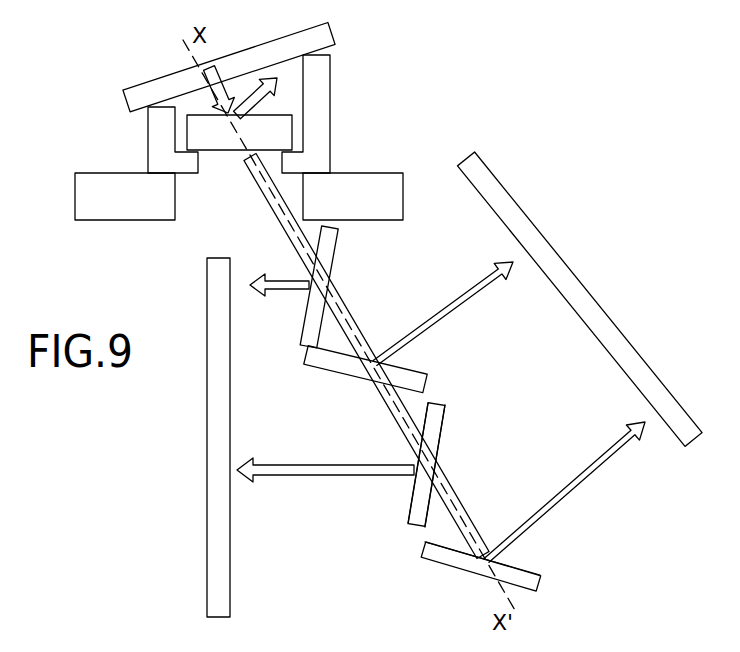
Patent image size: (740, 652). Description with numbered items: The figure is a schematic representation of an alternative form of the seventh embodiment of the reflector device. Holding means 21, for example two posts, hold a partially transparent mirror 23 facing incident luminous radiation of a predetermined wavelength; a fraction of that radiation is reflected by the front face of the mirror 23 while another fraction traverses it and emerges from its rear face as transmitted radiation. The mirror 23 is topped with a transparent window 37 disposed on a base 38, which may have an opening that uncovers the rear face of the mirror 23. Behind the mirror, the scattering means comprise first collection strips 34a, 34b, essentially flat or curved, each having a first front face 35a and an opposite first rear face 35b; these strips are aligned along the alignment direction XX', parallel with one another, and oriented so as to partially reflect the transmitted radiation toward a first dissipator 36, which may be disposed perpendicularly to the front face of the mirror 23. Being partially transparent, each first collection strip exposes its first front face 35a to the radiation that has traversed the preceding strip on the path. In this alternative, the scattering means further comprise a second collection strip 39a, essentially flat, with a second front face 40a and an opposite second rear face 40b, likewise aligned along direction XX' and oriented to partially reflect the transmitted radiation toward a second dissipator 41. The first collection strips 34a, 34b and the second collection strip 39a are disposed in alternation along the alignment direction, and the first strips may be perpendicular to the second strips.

The holding means 21 is at (88, 190).
The partially transparent mirror 23 is at (280, 137).
The transparent window 37 is at (133, 99).
The base 38 is at (323, 70).
The first collection strip 34a is at (327, 254).
The first collection strip 34b is at (420, 503).
The first front face 35a is at (415, 487).
The first rear face 35b is at (447, 440).
The first dissipator 36 is at (208, 507).
The second collection strip 39a is at (425, 380).
The second front face 40a is at (522, 565).
The second rear face 40b is at (440, 562).
The second dissipator 41 is at (533, 220).